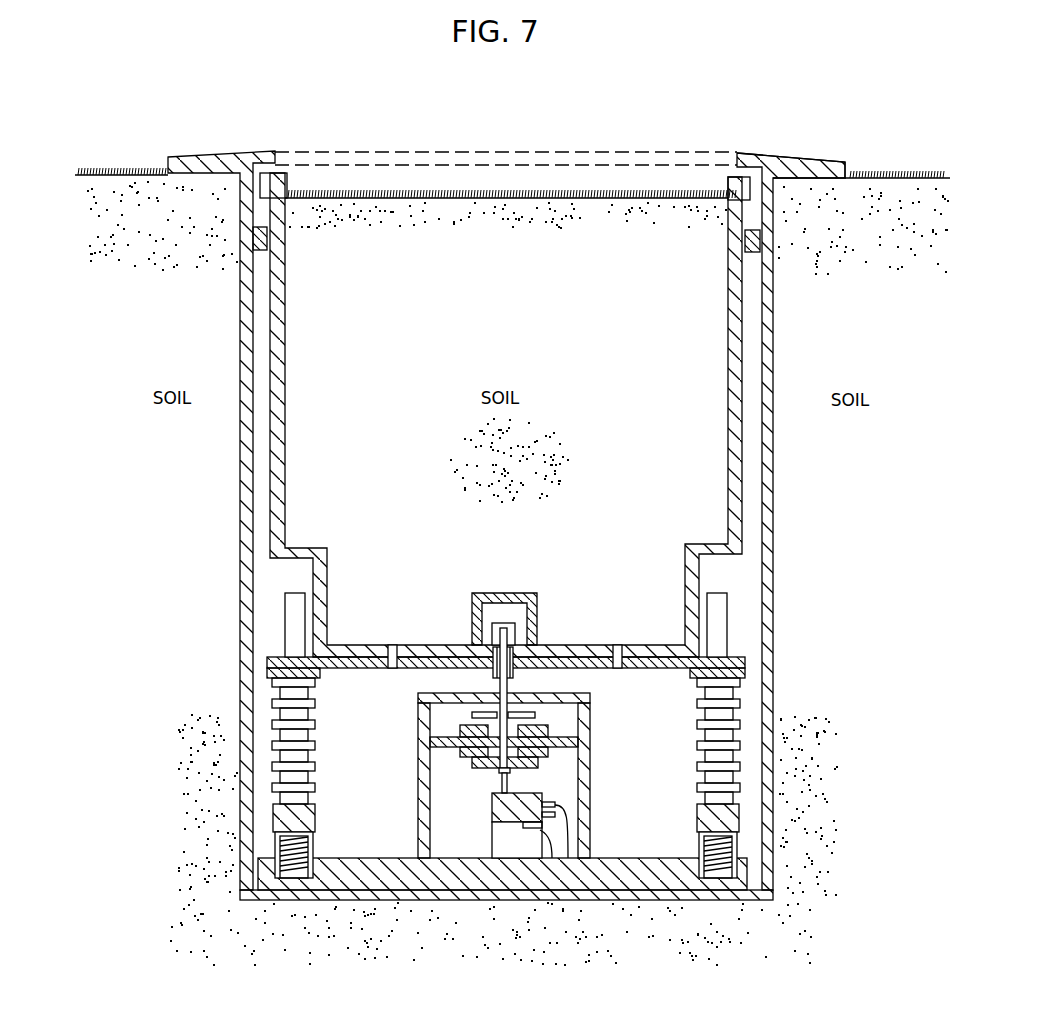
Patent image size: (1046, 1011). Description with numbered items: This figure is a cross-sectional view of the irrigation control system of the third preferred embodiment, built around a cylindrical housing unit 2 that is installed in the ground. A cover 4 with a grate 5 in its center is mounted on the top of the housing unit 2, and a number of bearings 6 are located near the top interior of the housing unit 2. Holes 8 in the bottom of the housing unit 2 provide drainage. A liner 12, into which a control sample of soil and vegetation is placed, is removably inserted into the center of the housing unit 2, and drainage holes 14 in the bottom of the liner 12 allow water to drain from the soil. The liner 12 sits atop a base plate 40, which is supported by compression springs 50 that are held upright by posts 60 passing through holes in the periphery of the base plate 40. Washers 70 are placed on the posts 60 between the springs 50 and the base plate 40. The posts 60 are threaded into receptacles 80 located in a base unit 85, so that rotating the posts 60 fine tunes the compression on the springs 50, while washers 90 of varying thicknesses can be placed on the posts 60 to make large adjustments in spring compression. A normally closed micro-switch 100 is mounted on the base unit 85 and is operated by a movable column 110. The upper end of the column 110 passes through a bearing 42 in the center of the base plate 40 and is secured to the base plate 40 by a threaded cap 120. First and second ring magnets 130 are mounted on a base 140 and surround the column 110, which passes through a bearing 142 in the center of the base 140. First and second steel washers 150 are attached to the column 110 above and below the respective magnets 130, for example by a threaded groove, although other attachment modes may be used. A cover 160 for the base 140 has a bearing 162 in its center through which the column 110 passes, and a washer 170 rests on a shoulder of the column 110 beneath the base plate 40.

The cylindrical housing unit 2 is at (240, 346).
The cover 4 is at (779, 155).
The grate 5 is at (497, 151).
The bearings 6 is at (253, 238).
The holes 8 is at (372, 901).
The liner 12 is at (285, 463).
The drainage holes 14 is at (392, 645).
The base plate 40 is at (413, 663).
The bearing 42 is at (492, 640).
The compression springs 50 is at (315, 745).
The posts 60 is at (295, 600).
The washers 70 is at (320, 673).
The receptacles 80 is at (313, 850).
The base unit 85 is at (614, 870).
The washers 90 is at (315, 815).
The micro-switch 100 is at (495, 803).
The movable column 110 is at (507, 689).
The threaded cap 120 is at (505, 622).
The ring magnets 130 is at (548, 736).
The base 140 is at (428, 830).
The bearing 142 is at (475, 763).
The steel washers 150 is at (536, 716).
The cover 160 is at (580, 700).
The bearing 162 is at (478, 711).
The washer 170 is at (494, 678).